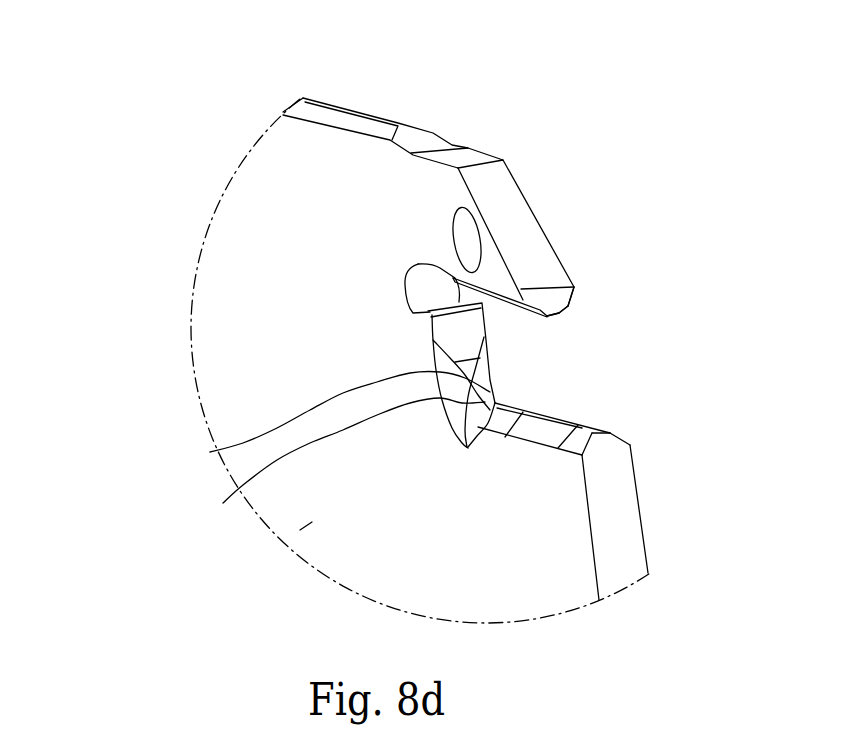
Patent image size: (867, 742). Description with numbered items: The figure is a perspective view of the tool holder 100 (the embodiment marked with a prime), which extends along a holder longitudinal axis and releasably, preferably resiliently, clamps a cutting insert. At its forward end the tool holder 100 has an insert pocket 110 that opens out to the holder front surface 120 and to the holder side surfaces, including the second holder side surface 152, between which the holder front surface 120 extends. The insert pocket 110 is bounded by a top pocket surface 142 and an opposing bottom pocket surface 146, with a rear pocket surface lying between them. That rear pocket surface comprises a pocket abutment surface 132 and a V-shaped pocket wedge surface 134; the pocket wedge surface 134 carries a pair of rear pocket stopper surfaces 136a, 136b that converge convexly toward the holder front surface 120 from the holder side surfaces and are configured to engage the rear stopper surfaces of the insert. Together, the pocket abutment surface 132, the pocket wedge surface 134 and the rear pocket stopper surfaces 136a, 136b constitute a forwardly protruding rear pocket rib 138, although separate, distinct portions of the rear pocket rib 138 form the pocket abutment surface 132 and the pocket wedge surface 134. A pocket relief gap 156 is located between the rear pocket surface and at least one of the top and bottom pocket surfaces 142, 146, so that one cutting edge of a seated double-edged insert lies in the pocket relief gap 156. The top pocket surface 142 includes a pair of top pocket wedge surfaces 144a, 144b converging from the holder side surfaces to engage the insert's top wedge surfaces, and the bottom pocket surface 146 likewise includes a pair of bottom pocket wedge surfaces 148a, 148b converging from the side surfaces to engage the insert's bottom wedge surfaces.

The tool holder 100 is at (177, 172).
The insert pocket 110 is at (636, 338).
The holder front surface 120 is at (630, 568).
The pocket abutment surface 132 is at (463, 330).
The pocket wedge surface 134 is at (520, 385).
The rear pocket stopper surface 136a is at (210, 452).
The rear pocket stopper surface 136b is at (339, 461).
The rear pocket rib 138 is at (417, 282).
The top pocket surface 142 is at (605, 315).
The top pocket wedge surface 144a is at (578, 308).
The top pocket wedge surface 144b is at (505, 293).
The bottom pocket surface 146 is at (610, 411).
The bottom pocket wedge surface 148a is at (620, 440).
The bottom pocket wedge surface 148b is at (582, 441).
The second holder side surface 152 is at (312, 522).
The pocket relief gap 156 is at (437, 236).